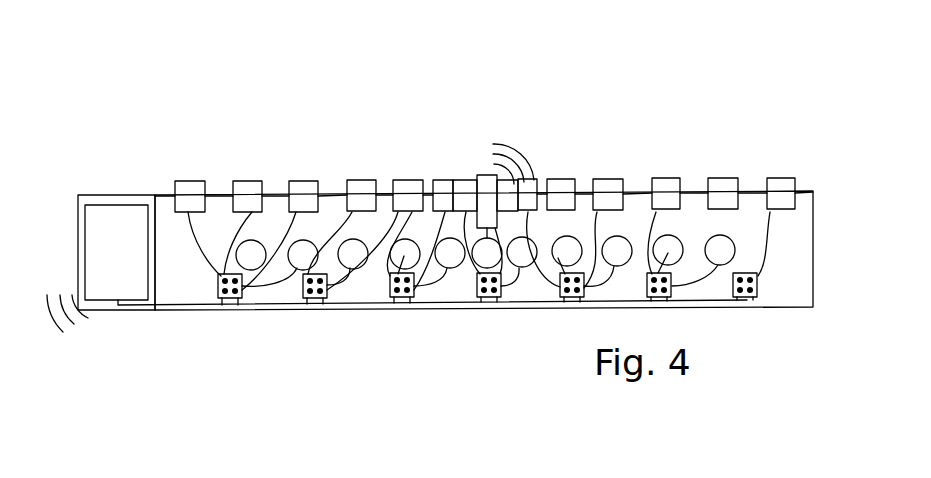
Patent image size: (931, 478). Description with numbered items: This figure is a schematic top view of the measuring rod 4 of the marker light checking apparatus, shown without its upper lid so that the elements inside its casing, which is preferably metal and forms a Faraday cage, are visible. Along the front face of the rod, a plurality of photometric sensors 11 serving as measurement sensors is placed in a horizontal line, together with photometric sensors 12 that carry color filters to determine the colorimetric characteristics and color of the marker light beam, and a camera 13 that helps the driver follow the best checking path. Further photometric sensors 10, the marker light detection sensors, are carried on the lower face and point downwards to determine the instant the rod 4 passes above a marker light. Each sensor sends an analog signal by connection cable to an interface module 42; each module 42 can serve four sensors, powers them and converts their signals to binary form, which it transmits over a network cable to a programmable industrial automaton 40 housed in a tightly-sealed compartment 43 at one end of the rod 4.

The measuring rod 4 is at (770, 293).
The photometric sensors 10 is at (350, 255).
The photometric sensors 11 is at (468, 181).
The photometric sensors 12 is at (475, 181).
The camera 13 is at (487, 175).
The programmable industrial automaton 40 is at (112, 218).
The interface module 42 is at (233, 305).
The tightly-sealed compartment 43 is at (90, 195).